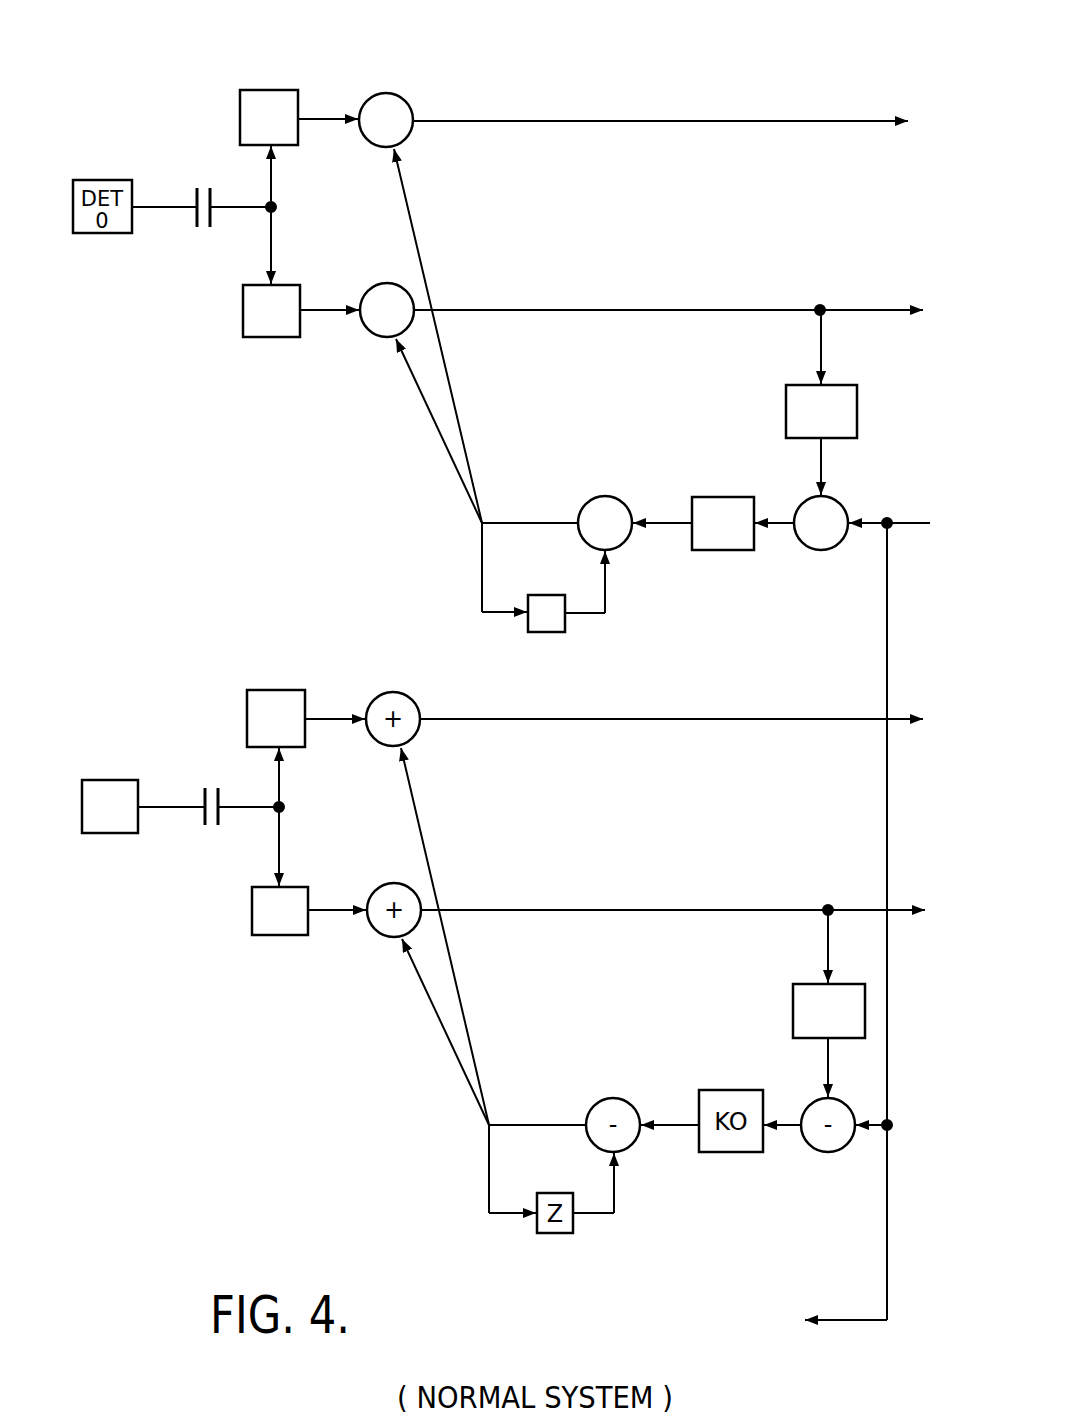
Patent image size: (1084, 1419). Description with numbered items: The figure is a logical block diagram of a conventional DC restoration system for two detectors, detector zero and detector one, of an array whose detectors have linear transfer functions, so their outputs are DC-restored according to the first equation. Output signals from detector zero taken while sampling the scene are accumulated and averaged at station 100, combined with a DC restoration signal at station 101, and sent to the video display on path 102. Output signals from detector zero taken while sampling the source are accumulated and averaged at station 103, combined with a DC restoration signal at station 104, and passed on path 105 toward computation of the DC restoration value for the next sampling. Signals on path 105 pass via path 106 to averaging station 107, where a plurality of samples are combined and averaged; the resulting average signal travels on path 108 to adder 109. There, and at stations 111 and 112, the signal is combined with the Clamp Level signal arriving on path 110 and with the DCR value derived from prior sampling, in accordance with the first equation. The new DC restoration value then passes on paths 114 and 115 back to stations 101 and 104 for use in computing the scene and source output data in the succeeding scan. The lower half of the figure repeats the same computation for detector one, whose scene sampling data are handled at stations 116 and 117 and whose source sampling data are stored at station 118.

The accumulating and averaging station 100 is at (272, 90).
The combining station 101 is at (388, 93).
The video display path 102 is at (725, 120).
The accumulating and averaging station 103 is at (292, 338).
The combining station 104 is at (383, 284).
The source signal path 105 is at (735, 308).
The path to averaging station 106 is at (822, 345).
The averaging station 107 is at (857, 410).
The average signal path 108 is at (822, 455).
The adder 109 is at (828, 551).
The Clamp Level signal path 110 is at (918, 506).
The combining station 111 is at (738, 497).
The combining station 112 is at (616, 497).
The DC restoration value path 114 is at (448, 373).
The DC restoration value path 115 is at (430, 410).
The scene data storage station 116 is at (122, 780).
The accumulating and averaging station 117 is at (268, 690).
The source data storage station 118 is at (292, 936).